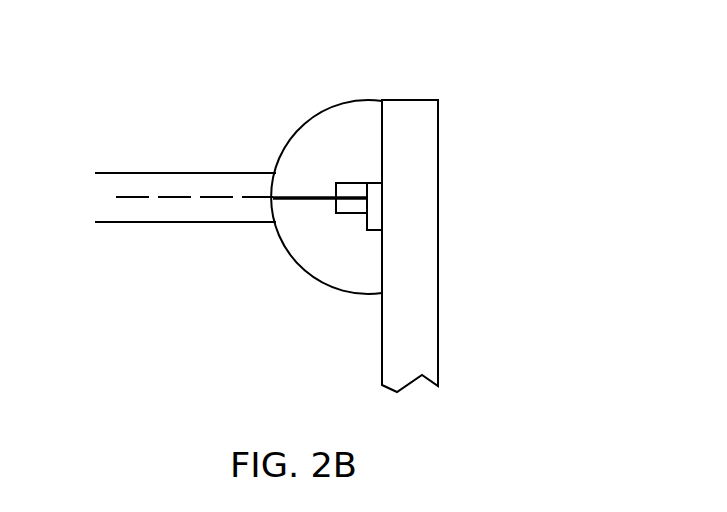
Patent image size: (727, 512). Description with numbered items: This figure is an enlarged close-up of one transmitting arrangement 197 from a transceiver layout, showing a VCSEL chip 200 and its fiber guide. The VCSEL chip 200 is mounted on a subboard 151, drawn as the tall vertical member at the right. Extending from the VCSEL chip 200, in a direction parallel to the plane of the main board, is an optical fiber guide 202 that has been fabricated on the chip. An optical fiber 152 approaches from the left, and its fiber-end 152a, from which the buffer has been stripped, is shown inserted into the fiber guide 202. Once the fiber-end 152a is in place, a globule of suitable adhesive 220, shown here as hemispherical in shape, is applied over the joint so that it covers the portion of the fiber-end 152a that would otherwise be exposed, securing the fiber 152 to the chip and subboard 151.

The subboard 151 is at (418, 303).
The globule of adhesive 220 is at (335, 120).
The optical fiber 152 is at (152, 210).
The fiber-end 152a is at (300, 203).
The optical fiber guide 202 is at (352, 187).
The VCSEL chip 200 is at (375, 205).
The transmitting arrangement 197 is at (335, 288).